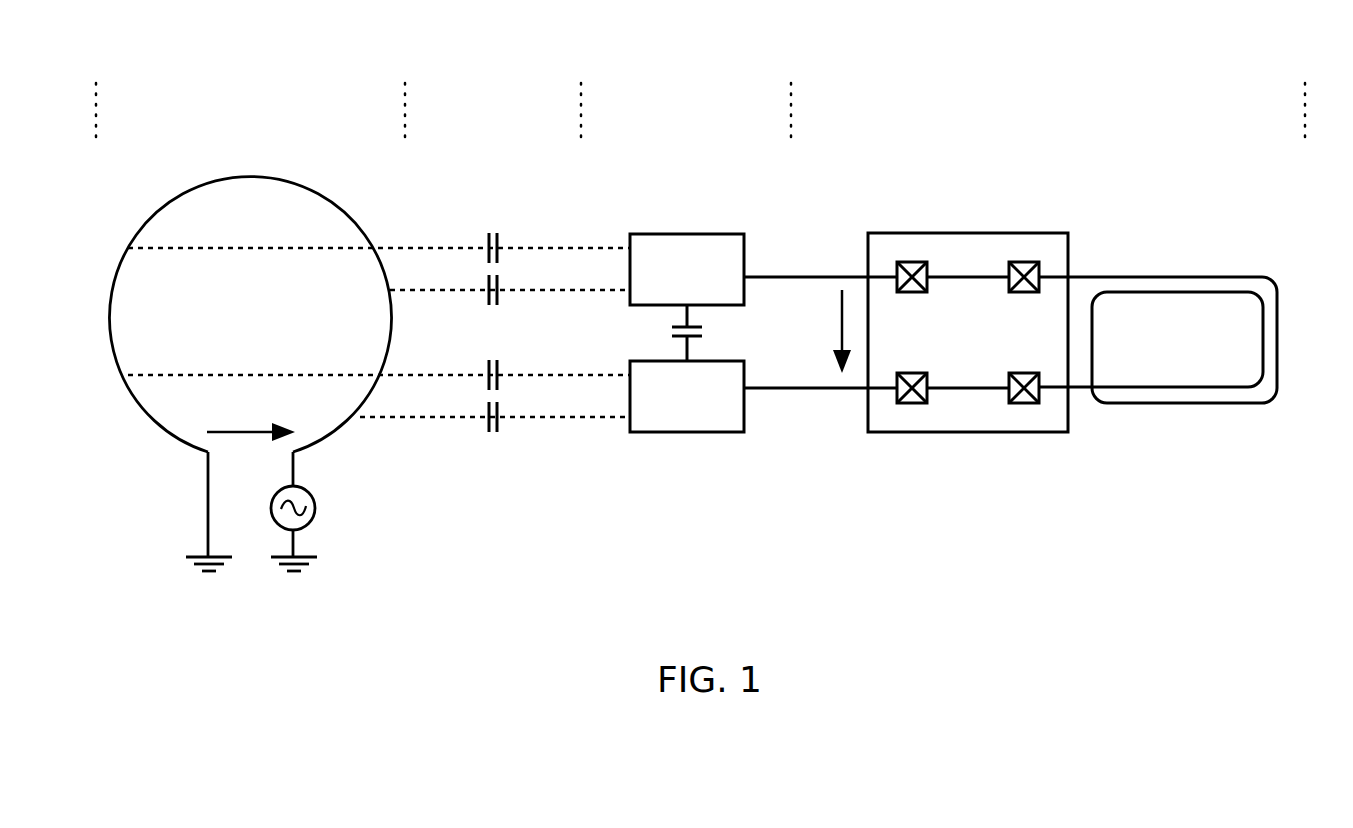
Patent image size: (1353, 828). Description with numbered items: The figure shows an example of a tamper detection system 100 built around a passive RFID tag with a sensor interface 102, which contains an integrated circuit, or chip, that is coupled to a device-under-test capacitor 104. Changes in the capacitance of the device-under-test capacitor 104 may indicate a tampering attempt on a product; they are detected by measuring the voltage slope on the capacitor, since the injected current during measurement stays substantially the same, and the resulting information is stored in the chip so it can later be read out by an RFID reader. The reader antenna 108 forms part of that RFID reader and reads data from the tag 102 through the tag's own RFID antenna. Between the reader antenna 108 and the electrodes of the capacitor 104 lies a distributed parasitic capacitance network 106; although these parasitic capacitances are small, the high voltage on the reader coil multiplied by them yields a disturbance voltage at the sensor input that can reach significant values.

The tamper detection system 100 is at (946, 518).
The passive RFID tag with a sensor interface 102 is at (1020, 93).
The device-under-test capacitor 104 is at (669, 85).
The distributed parasitic capacitance network 106 is at (480, 70).
The reader antenna 108 is at (233, 93).